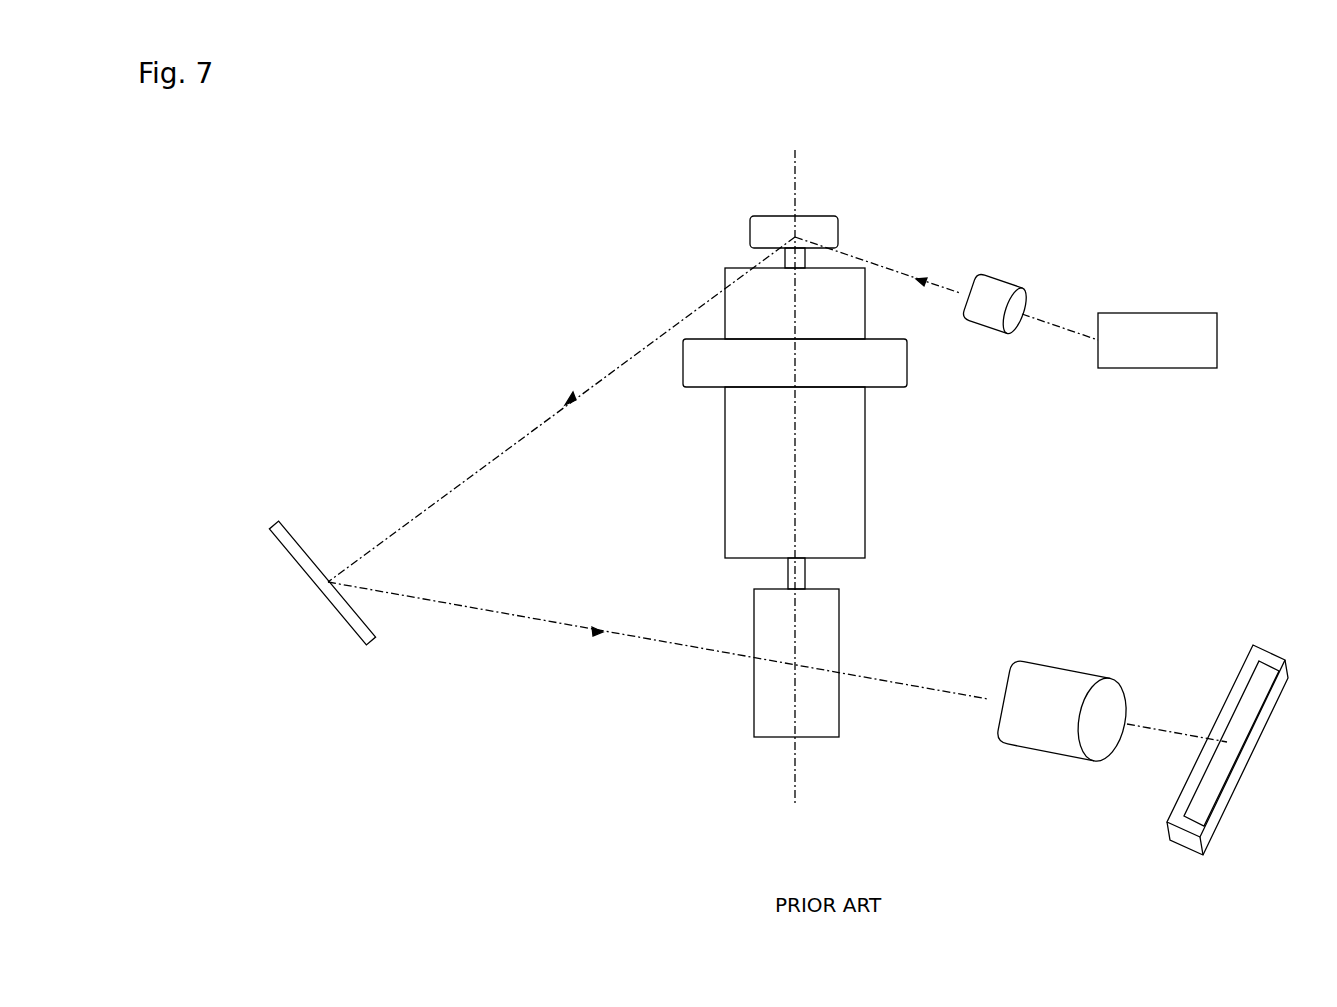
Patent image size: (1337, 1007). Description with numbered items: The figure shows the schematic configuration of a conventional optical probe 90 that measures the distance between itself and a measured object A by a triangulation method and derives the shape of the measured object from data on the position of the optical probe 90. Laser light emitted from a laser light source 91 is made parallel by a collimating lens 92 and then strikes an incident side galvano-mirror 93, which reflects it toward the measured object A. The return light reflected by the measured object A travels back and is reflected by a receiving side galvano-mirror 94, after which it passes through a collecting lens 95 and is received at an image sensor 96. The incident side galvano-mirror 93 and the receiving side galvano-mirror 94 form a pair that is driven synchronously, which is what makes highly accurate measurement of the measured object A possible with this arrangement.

The optical probe 90 is at (1116, 152).
The laser light source 91 is at (1157, 313).
The collimating lens 92 is at (992, 280).
The incident side galvano-mirror 93 is at (838, 233).
The receiving side galvano-mirror 94 is at (839, 714).
The collecting lens 95 is at (1058, 666).
The image sensor 96 is at (1266, 650).
The measured object A is at (293, 528).